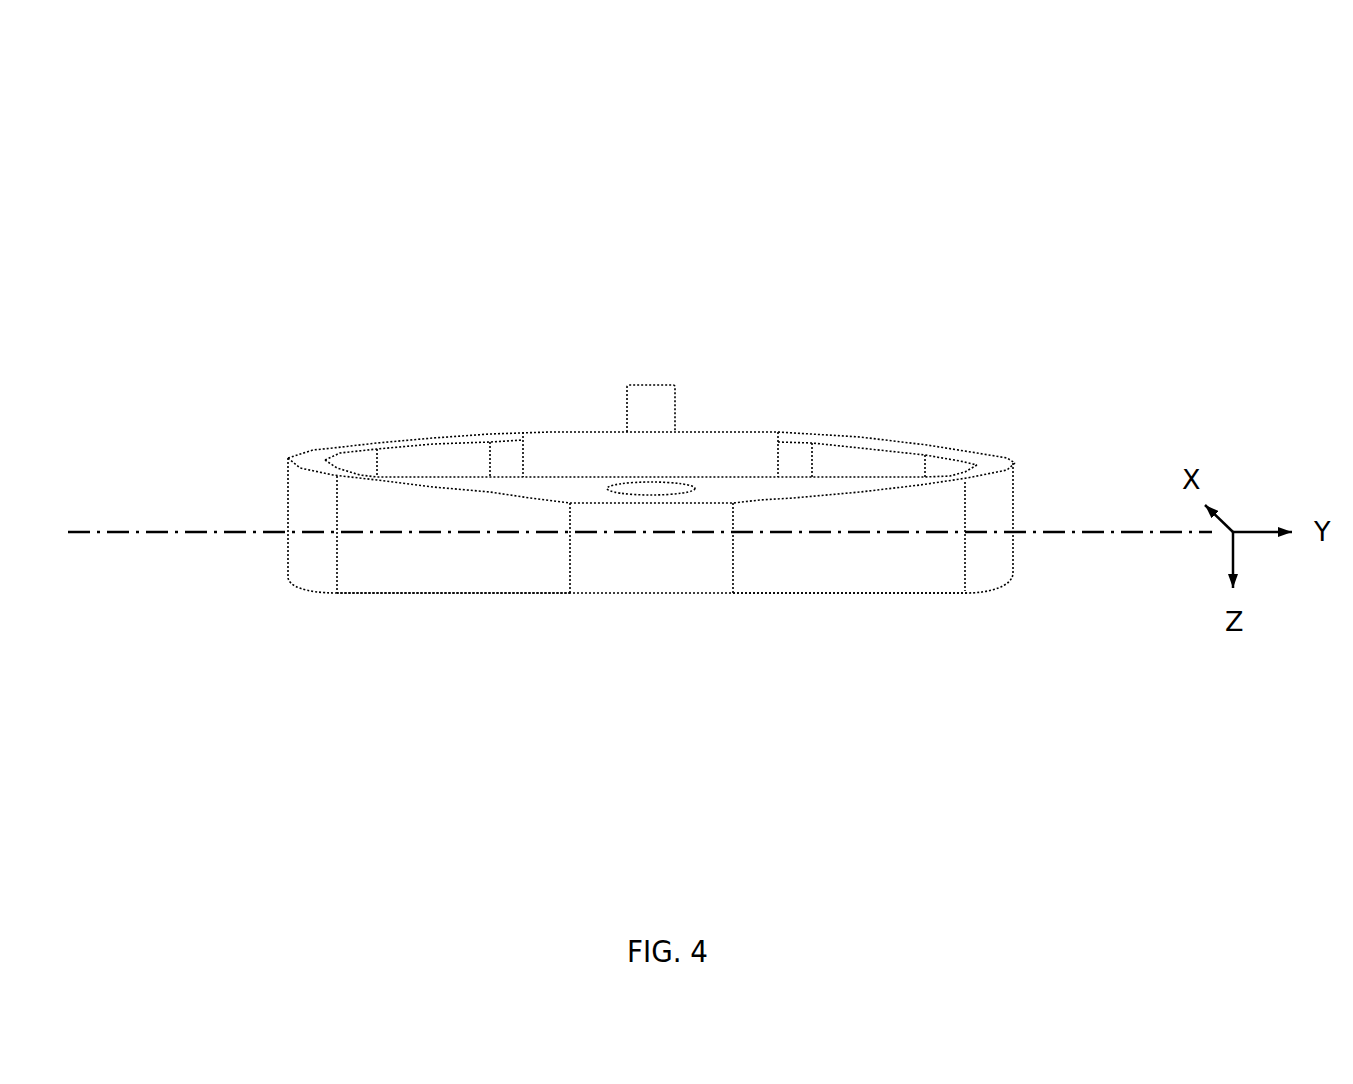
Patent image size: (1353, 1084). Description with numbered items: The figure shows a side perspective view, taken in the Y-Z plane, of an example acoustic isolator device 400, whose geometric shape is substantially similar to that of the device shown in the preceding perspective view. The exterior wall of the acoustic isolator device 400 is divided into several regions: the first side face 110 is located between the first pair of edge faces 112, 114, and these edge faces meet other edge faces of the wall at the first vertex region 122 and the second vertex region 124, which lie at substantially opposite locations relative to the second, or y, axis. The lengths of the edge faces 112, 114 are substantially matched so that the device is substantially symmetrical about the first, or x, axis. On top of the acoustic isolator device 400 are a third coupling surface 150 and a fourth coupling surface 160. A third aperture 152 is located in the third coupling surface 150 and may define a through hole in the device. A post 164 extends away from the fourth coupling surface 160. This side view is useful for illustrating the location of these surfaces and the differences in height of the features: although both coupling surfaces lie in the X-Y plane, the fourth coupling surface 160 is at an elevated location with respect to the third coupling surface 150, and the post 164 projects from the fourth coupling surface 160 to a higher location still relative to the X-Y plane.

The acoustic isolator device 400 is at (1205, 98).
The first side face 110 is at (645, 554).
The edge face 112 is at (849, 582).
The edge face 114 is at (436, 582).
The first vertex region 122 is at (1032, 566).
The second vertex region 124 is at (268, 558).
The third coupling surface 150 is at (566, 483).
The third aperture 152 is at (664, 482).
The fourth coupling surface 160 is at (603, 417).
The post 164 is at (649, 367).